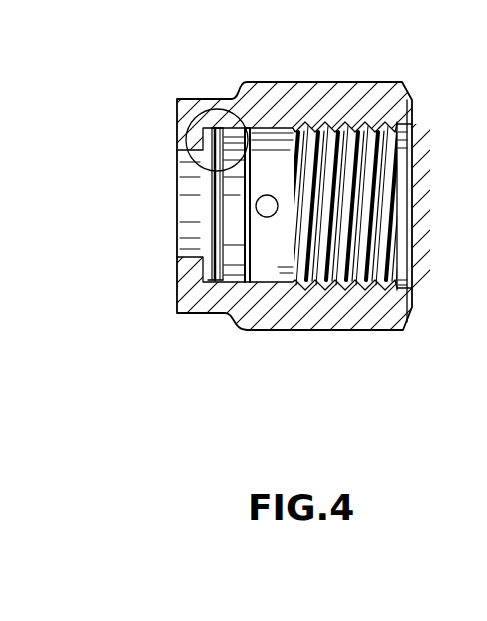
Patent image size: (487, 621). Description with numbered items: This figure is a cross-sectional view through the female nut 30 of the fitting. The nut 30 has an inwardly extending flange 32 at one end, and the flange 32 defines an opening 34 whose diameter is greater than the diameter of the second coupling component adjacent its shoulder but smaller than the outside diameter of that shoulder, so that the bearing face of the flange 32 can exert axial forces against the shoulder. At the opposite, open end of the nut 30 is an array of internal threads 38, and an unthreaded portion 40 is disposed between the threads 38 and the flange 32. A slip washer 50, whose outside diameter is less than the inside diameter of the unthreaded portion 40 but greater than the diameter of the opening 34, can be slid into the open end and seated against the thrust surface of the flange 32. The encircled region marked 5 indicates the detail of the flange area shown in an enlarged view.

The female nut 30 is at (329, 51).
The flange 32 is at (170, 276).
The opening 34 is at (192, 188).
The internal threads 38 is at (395, 274).
The unthreaded portion 40 is at (247, 331).
The detail circle for FIG. 5 is at (193, 125).
The slip washer 50 is at (126, 7).